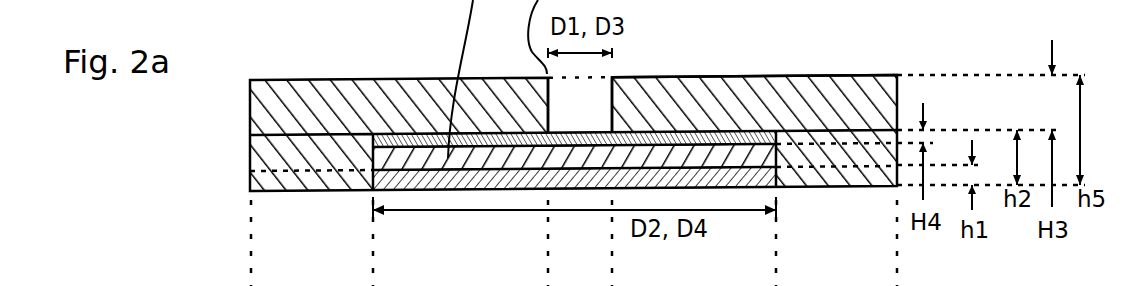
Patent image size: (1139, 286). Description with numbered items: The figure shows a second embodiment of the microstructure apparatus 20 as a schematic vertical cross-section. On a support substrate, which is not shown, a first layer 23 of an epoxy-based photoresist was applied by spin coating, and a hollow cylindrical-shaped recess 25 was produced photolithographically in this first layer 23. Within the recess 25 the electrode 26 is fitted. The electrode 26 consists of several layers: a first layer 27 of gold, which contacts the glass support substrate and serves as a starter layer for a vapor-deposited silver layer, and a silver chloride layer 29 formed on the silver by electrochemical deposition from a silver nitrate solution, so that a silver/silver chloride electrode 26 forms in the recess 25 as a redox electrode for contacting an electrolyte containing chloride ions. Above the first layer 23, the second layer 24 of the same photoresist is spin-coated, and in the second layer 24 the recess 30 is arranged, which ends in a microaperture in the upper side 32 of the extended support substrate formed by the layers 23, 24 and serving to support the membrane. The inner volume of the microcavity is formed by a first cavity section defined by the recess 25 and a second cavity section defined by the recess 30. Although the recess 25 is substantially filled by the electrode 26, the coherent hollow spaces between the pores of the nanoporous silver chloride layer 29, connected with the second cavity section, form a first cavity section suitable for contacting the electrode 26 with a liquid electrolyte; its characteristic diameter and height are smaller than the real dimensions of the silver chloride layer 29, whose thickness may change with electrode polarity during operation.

The microstructure apparatus 20 is at (195, 164).
The first layer 23 is at (250, 157).
The second layer 24 is at (250, 105).
The recess 25 is at (773, 157).
The electrode 26 is at (705, 130).
The first layer of gold 27 is at (423, 174).
The silver chloride layer 29 is at (476, 140).
The recess 30 is at (614, 101).
The upper side 32 is at (868, 73).